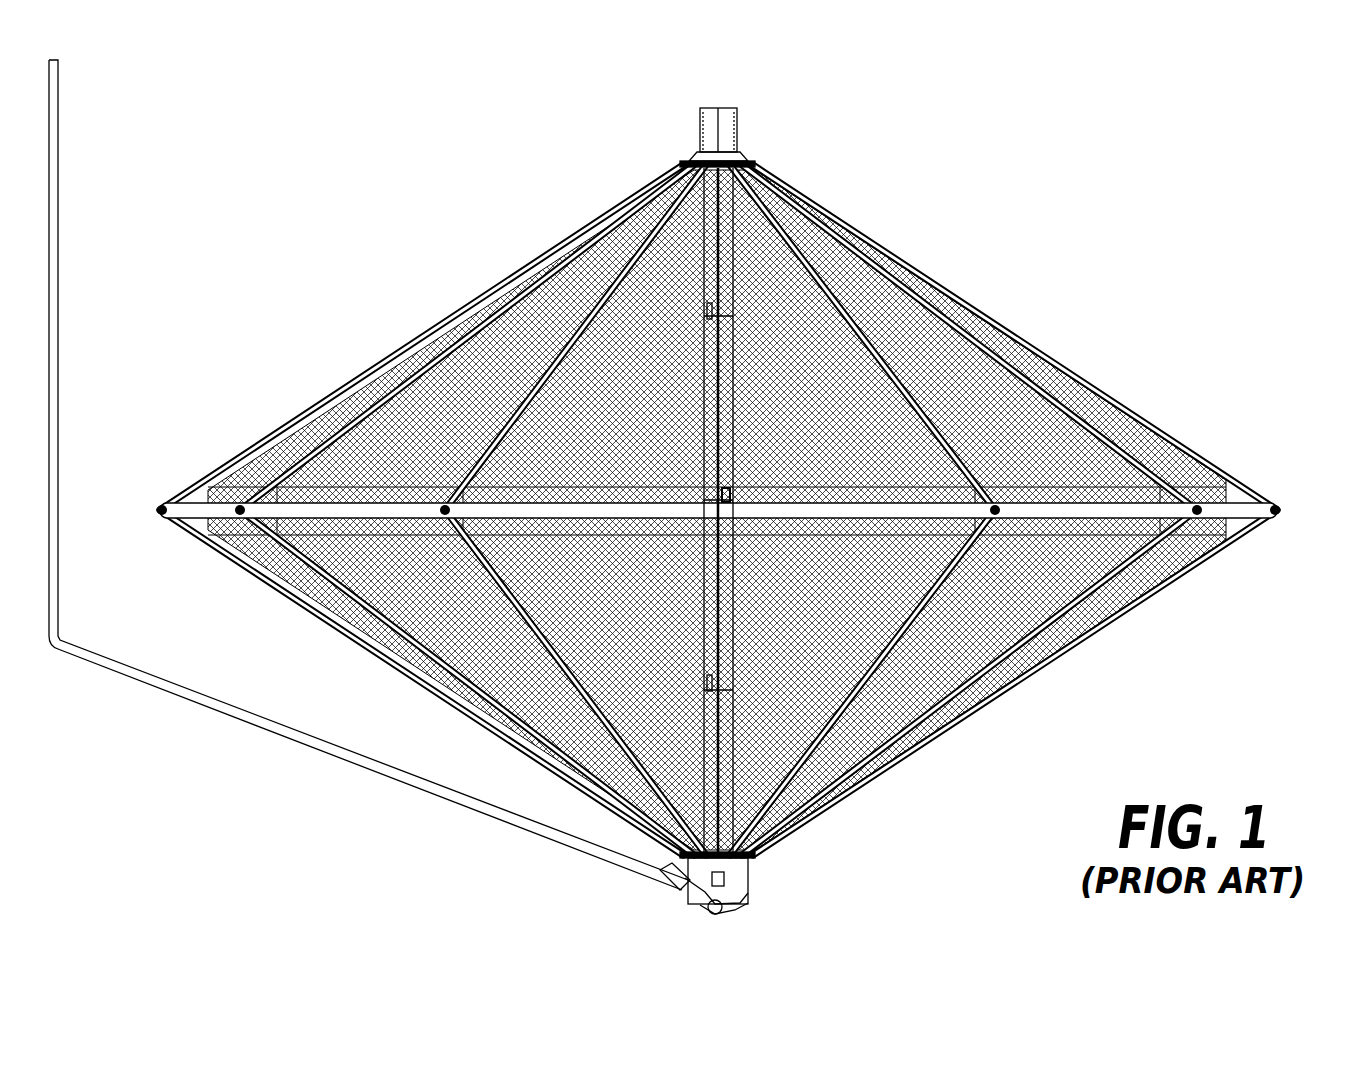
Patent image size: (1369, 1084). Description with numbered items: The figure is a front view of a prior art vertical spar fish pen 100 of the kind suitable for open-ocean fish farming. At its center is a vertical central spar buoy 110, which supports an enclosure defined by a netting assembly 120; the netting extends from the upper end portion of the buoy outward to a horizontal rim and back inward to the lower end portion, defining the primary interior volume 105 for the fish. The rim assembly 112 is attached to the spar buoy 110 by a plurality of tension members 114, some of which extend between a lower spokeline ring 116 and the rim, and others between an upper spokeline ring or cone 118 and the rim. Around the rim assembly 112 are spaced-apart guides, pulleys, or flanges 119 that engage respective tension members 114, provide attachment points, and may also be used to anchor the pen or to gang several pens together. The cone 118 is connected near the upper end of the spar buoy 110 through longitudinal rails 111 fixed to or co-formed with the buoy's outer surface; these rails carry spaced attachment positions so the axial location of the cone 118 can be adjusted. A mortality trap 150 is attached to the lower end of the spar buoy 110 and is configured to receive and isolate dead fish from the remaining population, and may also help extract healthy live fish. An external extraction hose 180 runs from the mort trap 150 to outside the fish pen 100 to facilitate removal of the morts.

The vertical spar fish pen 100 is at (755, 505).
The primary interior volume 105 is at (1048, 458).
The central spar buoy 110 is at (738, 242).
The longitudinal rails 111 is at (700, 114).
The rim assembly 112 is at (1237, 498).
The tension members 114 is at (845, 290).
The lower spokeline ring 116 is at (755, 856).
The upper spokeline ring or cone 118 is at (748, 158).
The guides, pulleys, or flanges 119 is at (1283, 518).
The netting assembly 120 is at (478, 320).
The mortality trap 150 is at (770, 891).
The external extraction hose 180 is at (60, 165).